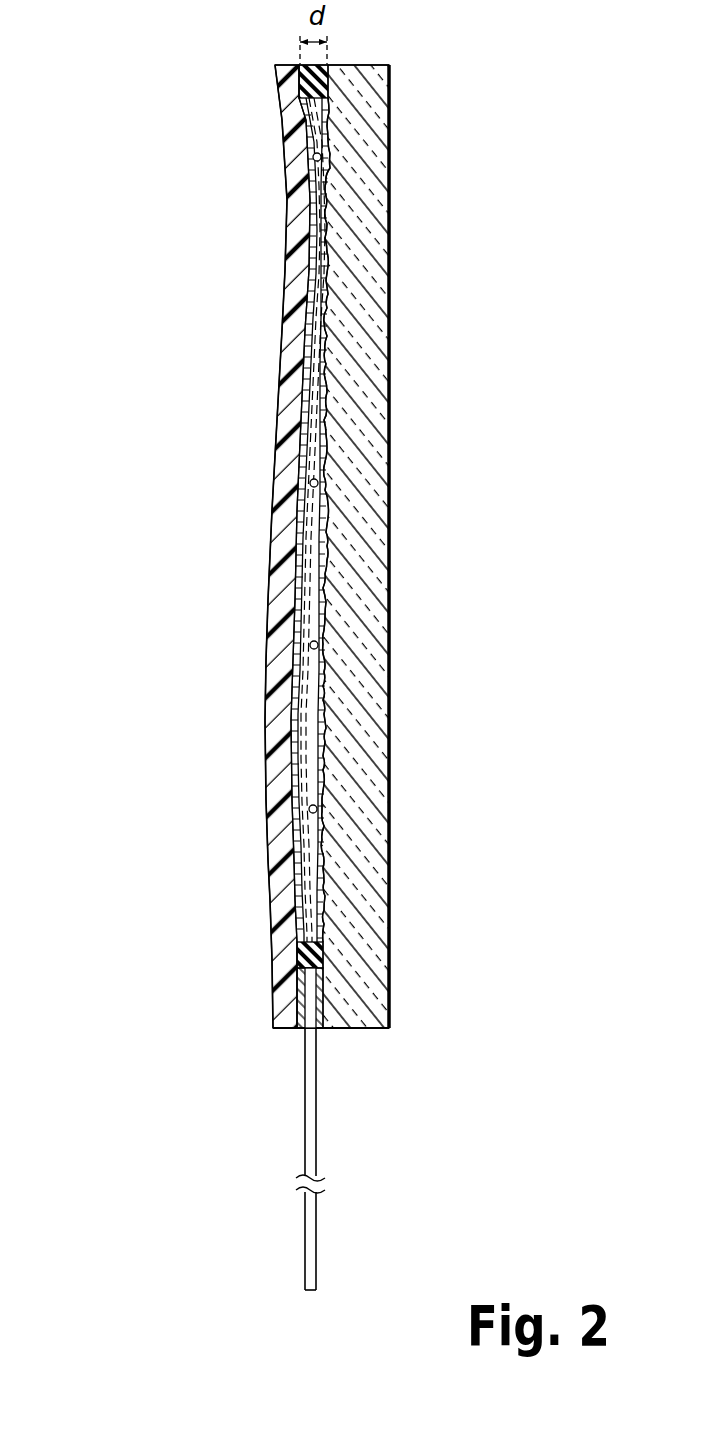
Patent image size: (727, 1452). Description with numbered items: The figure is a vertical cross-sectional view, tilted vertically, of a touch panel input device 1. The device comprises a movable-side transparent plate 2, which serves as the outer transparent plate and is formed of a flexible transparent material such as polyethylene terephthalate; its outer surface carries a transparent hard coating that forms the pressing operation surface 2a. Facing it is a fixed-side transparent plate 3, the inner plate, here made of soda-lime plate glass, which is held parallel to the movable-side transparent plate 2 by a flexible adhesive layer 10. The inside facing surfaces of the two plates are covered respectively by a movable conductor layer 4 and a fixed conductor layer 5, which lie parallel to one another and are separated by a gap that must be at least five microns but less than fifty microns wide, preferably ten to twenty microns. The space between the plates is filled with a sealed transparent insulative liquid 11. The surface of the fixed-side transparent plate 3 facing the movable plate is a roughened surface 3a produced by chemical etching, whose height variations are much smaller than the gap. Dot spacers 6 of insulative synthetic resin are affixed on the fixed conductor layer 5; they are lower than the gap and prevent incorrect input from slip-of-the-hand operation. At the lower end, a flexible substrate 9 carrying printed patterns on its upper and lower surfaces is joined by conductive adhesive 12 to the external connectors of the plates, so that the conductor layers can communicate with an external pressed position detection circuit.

The touch panel input device 1 is at (130, 494).
The movable-side transparent plate 2 is at (297, 236).
The pressing operation surface 2a is at (253, 365).
The fixed-side transparent plate 3 is at (377, 220).
The roughened surface 3a is at (318, 858).
The movable conductor layer 4 is at (295, 655).
The fixed conductor layer 5 is at (330, 630).
The dot spacers 6 is at (318, 484).
The flexible substrate 9 is at (304, 1127).
The flexible adhesive layer 10 is at (300, 945).
The transparent insulative liquid 11 is at (302, 522).
The conductive adhesive 12 is at (277, 1005).